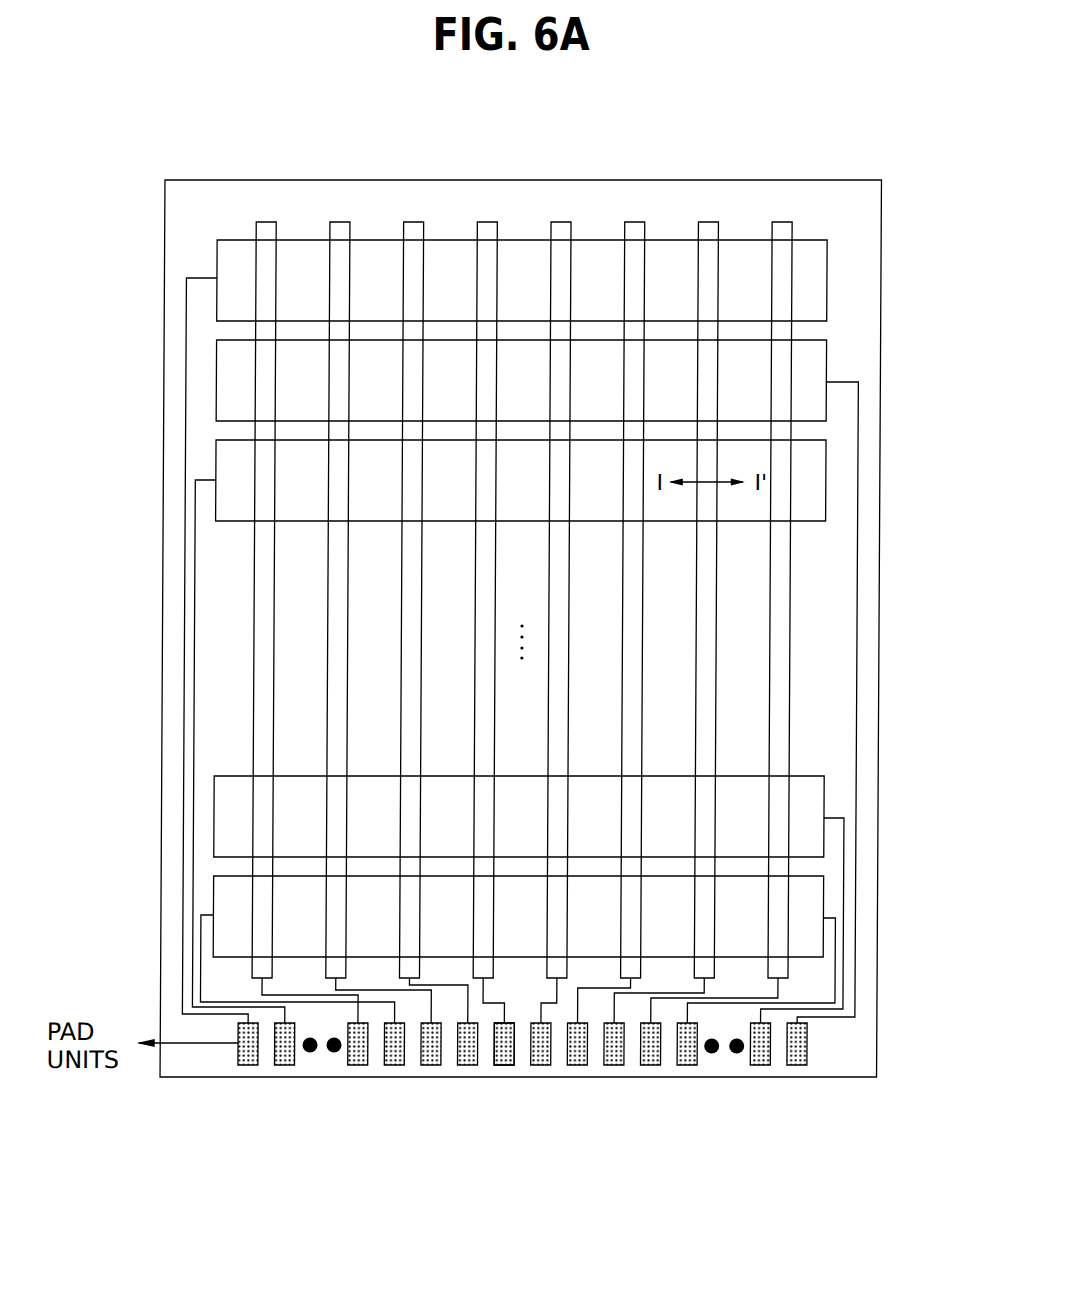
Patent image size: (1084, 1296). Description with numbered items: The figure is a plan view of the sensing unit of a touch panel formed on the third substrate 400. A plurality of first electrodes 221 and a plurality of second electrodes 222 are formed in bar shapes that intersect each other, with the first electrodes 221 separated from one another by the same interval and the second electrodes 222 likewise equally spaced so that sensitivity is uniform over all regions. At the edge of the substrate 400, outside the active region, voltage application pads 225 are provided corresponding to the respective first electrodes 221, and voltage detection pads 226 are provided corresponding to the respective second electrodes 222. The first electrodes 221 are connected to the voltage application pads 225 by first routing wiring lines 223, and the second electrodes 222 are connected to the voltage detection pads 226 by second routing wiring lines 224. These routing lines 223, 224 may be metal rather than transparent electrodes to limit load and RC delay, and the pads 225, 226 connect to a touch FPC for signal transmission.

The third substrate 400 is at (879, 218).
The first electrodes 221 is at (825, 355).
The second electrodes 222 is at (780, 222).
The first routing wiring lines 223 is at (857, 992).
The second routing wiring lines 224 is at (505, 1012).
The voltage application pads 225 is at (799, 1065).
The voltage detection pads 226 is at (504, 1065).